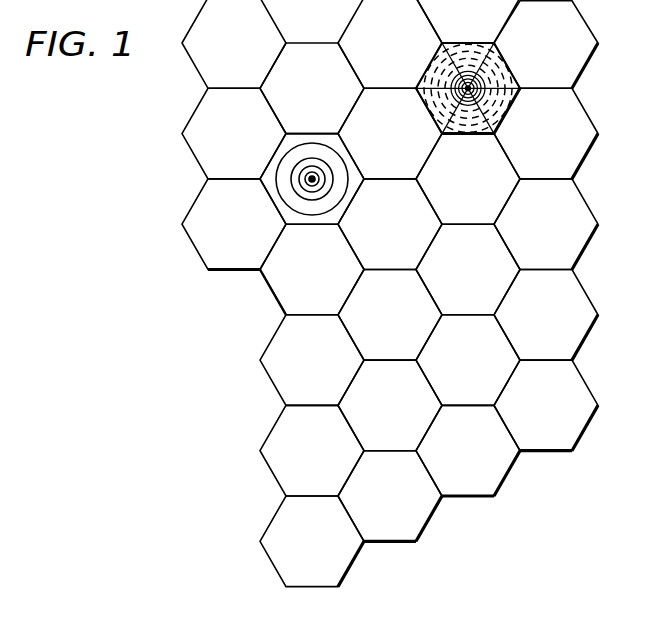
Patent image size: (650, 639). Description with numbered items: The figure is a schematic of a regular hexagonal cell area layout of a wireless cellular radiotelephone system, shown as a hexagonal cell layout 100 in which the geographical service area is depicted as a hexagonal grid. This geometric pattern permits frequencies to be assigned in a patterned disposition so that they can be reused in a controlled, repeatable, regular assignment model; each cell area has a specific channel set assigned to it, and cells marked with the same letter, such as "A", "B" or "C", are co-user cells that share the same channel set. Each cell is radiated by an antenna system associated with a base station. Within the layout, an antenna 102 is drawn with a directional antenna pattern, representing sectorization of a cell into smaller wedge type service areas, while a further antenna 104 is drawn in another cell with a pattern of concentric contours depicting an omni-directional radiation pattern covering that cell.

The cellular system hexagonal cell layout 100 is at (390, 293).
The antenna 102 is at (469, 85).
The cell with concentric coverage contours 104 is at (308, 181).